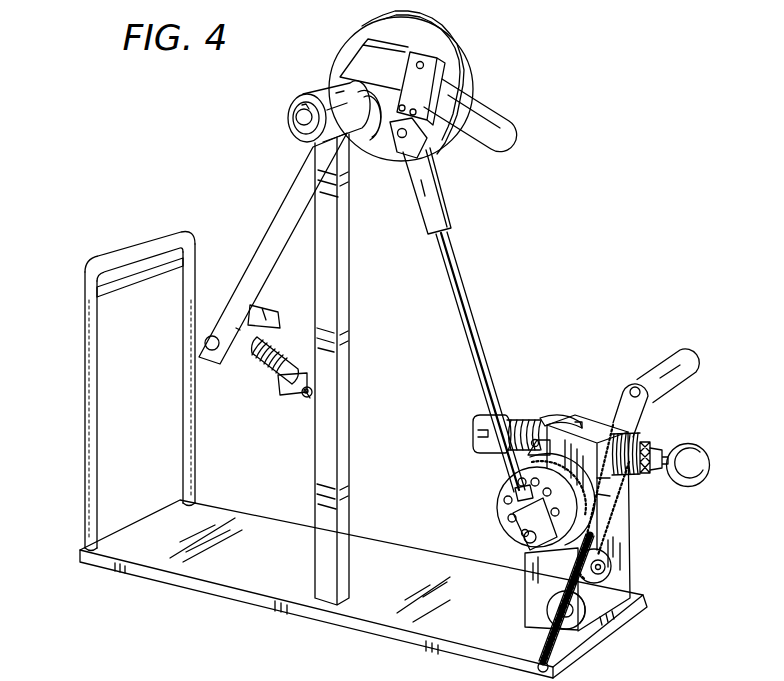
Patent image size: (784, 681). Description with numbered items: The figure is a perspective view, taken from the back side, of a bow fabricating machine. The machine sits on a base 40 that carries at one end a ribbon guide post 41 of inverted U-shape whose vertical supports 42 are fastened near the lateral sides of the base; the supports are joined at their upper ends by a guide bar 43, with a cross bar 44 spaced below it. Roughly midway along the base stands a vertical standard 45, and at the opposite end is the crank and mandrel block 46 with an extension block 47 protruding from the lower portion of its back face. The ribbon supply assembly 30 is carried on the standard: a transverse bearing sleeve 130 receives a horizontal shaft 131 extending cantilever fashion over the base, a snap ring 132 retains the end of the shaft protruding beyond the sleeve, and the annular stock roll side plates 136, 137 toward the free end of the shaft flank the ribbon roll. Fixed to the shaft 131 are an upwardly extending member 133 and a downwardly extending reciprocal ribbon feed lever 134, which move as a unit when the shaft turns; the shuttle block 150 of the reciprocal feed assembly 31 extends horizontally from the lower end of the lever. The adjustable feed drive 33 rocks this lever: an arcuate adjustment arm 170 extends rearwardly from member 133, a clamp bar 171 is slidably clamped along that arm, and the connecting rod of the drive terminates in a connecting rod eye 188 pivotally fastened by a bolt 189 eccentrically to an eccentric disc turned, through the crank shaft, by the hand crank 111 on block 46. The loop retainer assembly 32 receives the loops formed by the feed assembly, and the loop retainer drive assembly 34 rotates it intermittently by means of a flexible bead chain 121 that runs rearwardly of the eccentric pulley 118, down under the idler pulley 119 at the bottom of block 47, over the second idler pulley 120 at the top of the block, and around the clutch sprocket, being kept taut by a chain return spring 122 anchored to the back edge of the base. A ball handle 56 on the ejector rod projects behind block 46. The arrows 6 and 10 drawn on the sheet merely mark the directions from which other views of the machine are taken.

The section line 6- 6 is at (470, 424).
The section line 10- 10 is at (230, 302).
The ribbon supply assembly 30 is at (421, 82).
The reciprocal ribbon feed assembly 31 is at (264, 383).
The loop retainer assembly 32 is at (549, 409).
The ribbon feed drive 33 is at (449, 212).
The loop retainer drive assembly 34 is at (604, 550).
The base 40 is at (418, 589).
The ribbon guide post 41 is at (114, 379).
The vertical supports 42 is at (183, 371).
The guide bar 43 is at (145, 245).
The cross bar 44 is at (123, 284).
The vertical standard 45 is at (345, 322).
The crank and mandrel block 46 is at (622, 565).
The extension block 47 is at (533, 583).
The ball handle 56 is at (691, 456).
The hand crank 111 is at (633, 385).
The eccentric pulley 118 is at (575, 513).
The idler pulley 119 is at (548, 608).
The second idler pulley 120 is at (600, 580).
The flexible bead chain 121 is at (618, 492).
The chain return spring 122 is at (556, 632).
The bearing sleeve 130 is at (307, 100).
The horizontal shaft 131 is at (300, 119).
The snap ring 132 is at (300, 106).
The upwardly extending member 133 is at (343, 80).
The reciprocal ribbon feed lever 134 is at (285, 212).
The stock roll side plate 136 is at (375, 38).
The stock roll side plate 137 is at (430, 31).
The shuttle block 150 is at (273, 320).
The arcuate adjustment arm 170 is at (490, 118).
The clamp bar 171 is at (414, 78).
The connecting rod eye 188 is at (507, 530).
The bolt 189 is at (527, 538).